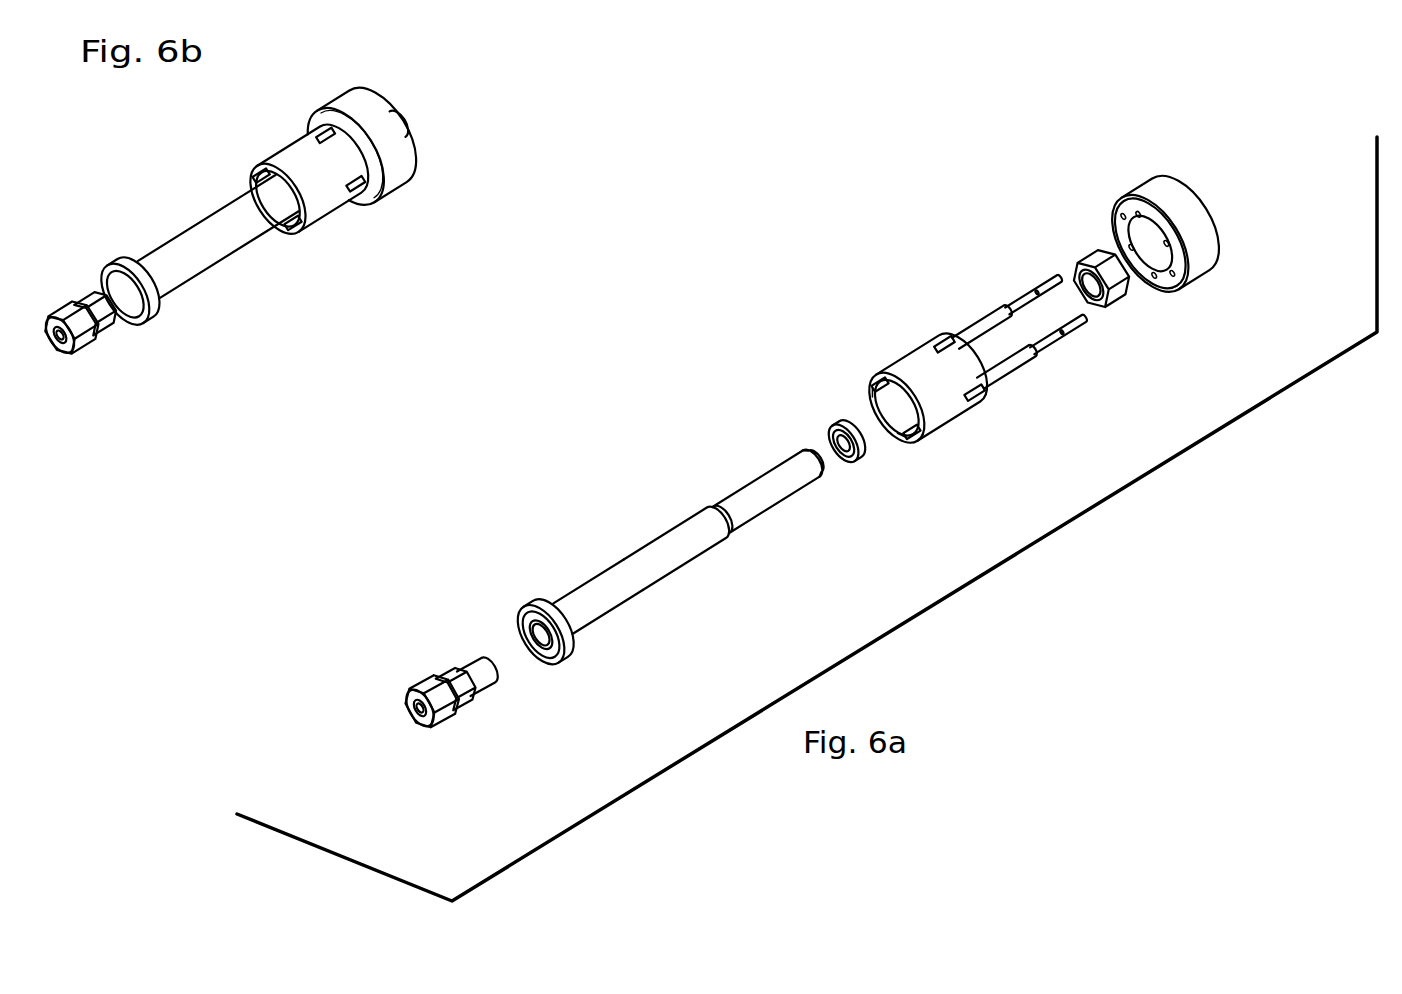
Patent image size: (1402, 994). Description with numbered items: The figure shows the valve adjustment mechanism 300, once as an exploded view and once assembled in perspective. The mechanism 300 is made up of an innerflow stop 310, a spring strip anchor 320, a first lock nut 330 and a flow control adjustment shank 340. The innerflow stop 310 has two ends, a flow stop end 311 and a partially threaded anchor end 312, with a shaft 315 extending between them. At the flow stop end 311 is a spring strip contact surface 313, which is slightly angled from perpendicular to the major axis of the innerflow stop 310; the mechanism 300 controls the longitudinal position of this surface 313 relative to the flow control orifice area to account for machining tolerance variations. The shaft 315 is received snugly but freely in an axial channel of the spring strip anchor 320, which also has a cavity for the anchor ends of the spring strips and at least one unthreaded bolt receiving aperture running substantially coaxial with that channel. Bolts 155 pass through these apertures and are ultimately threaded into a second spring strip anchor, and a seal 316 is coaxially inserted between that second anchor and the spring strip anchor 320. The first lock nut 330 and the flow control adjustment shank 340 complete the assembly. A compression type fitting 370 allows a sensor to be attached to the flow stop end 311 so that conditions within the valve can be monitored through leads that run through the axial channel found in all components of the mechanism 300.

In FIG. 6A, the valve adjustment mechanism 300 is at (978, 590).
In FIG. 6B, the valve adjustment mechanism 300 is at (272, 255).
In FIG. 6A, the innerflow stop 310 is at (708, 573).
In FIG. 6A, the flow stop end 311 is at (580, 647).
In FIG. 6A, the partially threaded anchor end 312 is at (813, 490).
In FIG. 6A, the spring strip contact surface 313 is at (522, 618).
In FIG. 6A, the shaft 315 is at (795, 520).
In FIG. 6A, the seal 316 is at (867, 457).
In FIG. 6A, the spring strip anchor 320 is at (893, 358).
In FIG. 6A, the first lock nut 330 is at (1125, 300).
In FIG. 6A, the flow control adjustment shank 340 is at (1205, 280).
In FIG. 6A, the compression type fitting 370 is at (407, 686).
In FIG. 6A, the bolts 155 is at (1002, 307).